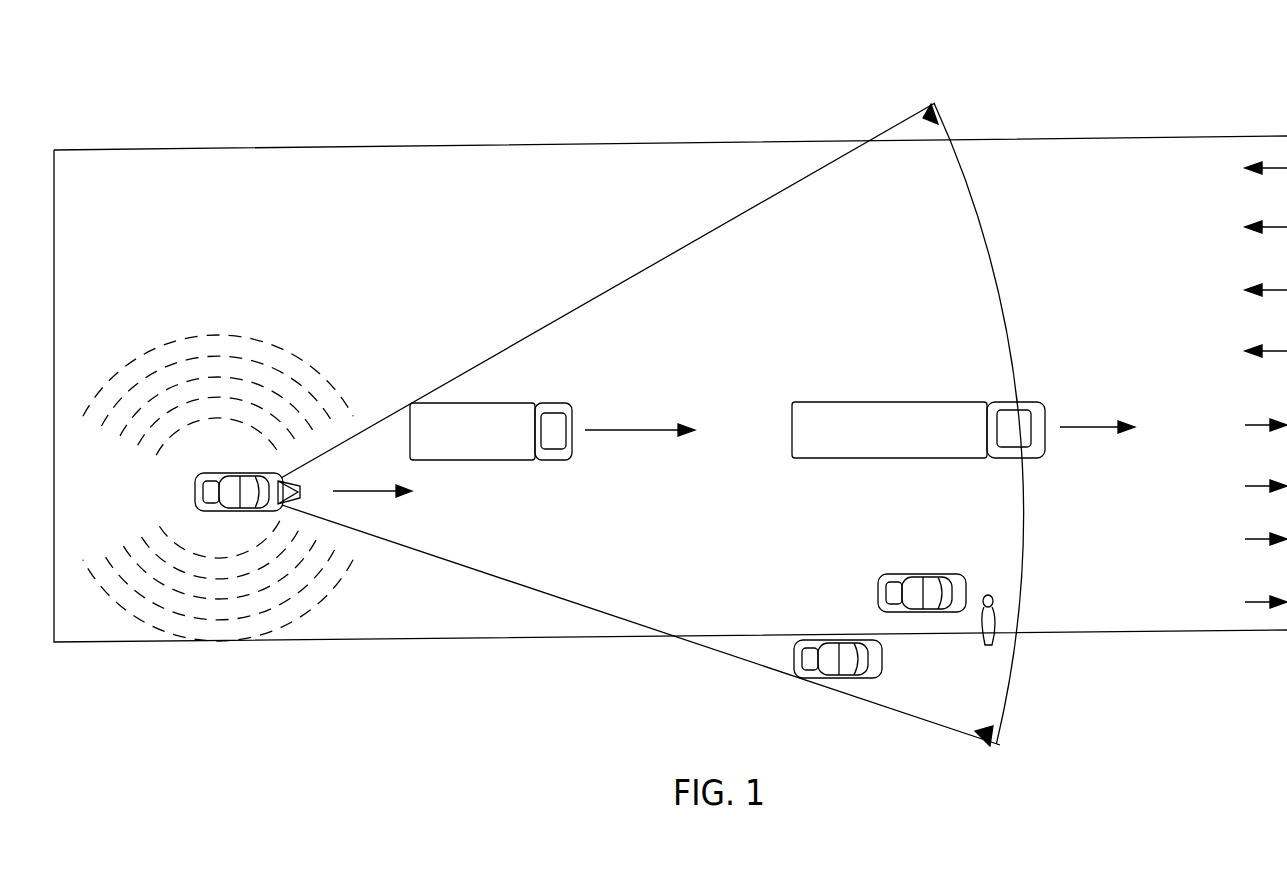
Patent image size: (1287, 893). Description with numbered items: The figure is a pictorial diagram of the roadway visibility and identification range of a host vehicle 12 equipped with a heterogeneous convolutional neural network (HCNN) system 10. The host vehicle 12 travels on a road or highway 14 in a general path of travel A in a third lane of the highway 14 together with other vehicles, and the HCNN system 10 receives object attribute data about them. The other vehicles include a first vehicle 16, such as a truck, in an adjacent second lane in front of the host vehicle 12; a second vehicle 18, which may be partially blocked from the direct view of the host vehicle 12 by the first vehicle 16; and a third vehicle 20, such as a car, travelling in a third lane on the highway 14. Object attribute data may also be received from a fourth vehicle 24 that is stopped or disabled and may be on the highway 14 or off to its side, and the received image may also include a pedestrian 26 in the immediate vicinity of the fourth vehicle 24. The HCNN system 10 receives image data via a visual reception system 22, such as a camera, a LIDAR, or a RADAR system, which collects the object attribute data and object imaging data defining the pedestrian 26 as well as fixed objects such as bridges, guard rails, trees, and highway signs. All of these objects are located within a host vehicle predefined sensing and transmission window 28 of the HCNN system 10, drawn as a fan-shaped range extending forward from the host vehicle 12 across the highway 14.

The heterogeneous convolutional neural network (HCNN) system 10 is at (1122, 60).
The host vehicle 12 is at (195, 493).
The highway 14 is at (448, 642).
The first vehicle 16 is at (470, 462).
The second vehicle 18 is at (868, 460).
The third vehicle 20 is at (921, 615).
The visual reception system 22 is at (300, 487).
The fourth vehicle 24 is at (823, 645).
The pedestrian 26 is at (999, 604).
The host vehicle predefined sensing and transmission window 28 is at (848, 695).